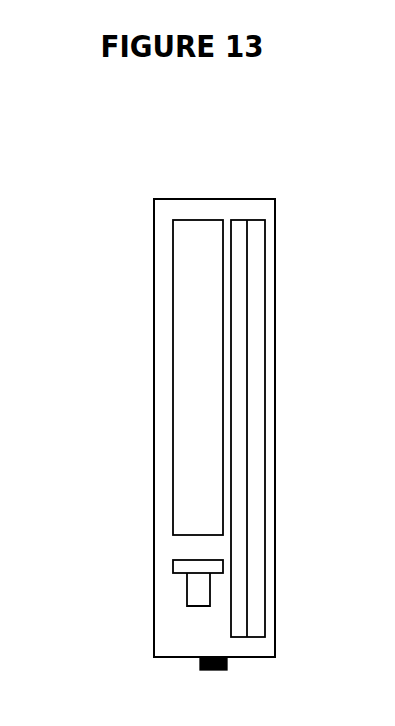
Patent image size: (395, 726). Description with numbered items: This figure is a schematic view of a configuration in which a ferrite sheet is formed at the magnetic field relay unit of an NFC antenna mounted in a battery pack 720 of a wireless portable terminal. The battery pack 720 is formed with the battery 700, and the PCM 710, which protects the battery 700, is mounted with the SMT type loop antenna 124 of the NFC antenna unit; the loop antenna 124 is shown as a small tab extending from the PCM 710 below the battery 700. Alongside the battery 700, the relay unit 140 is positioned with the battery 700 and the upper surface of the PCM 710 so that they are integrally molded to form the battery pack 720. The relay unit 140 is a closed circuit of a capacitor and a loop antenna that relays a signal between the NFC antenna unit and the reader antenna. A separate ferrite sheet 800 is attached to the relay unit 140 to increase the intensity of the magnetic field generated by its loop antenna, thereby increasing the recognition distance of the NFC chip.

The battery pack 720 is at (131, 249).
The battery 700 is at (192, 428).
The ferrite sheet 800 is at (237, 225).
The relay unit 140 is at (258, 358).
The PCM (Protect Circuit Module) 710 is at (182, 567).
The SMT type loop antenna 124 is at (197, 593).